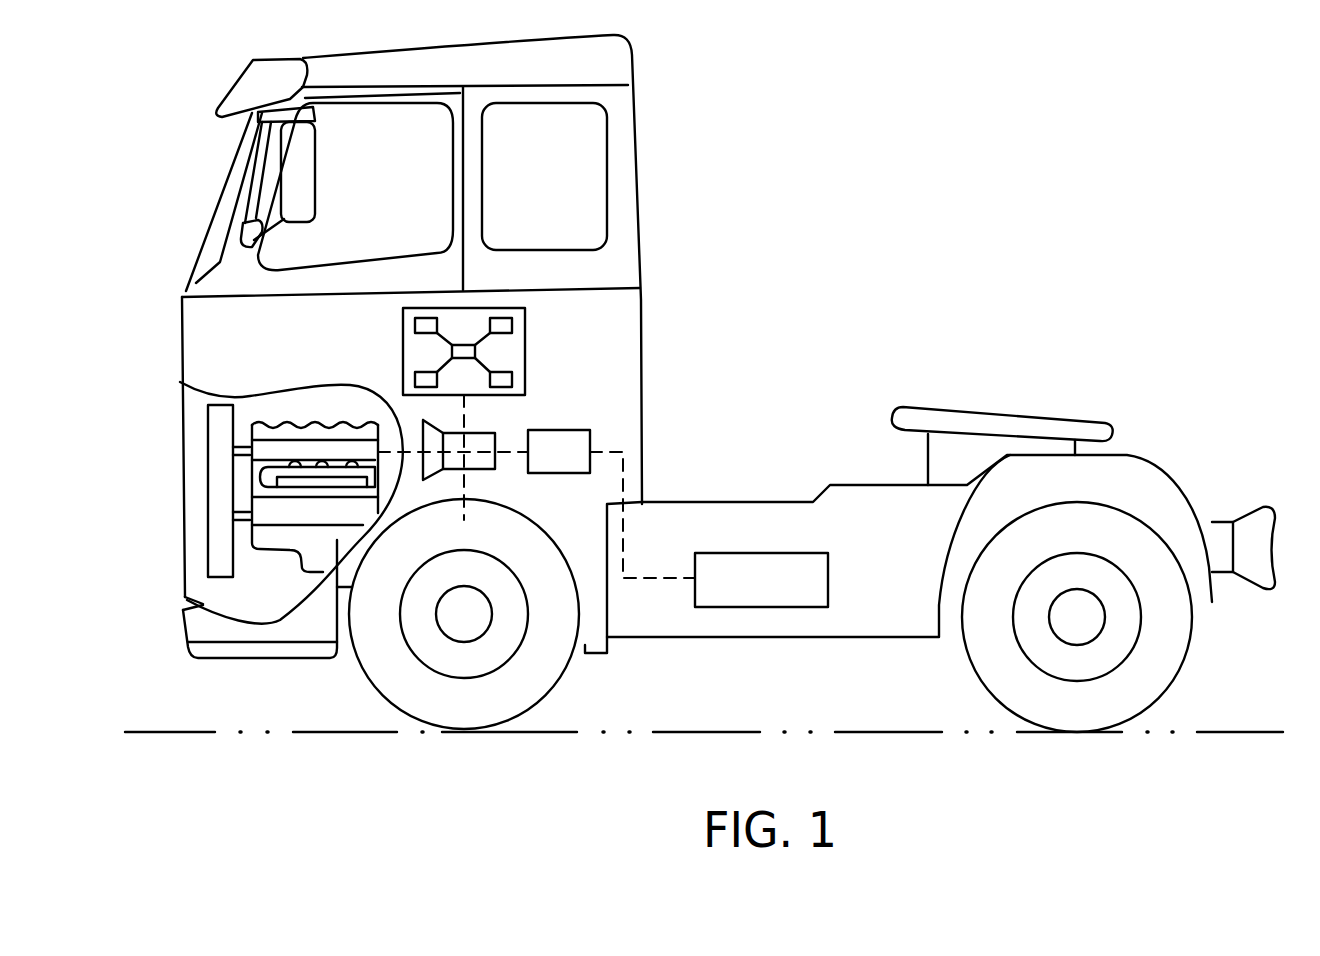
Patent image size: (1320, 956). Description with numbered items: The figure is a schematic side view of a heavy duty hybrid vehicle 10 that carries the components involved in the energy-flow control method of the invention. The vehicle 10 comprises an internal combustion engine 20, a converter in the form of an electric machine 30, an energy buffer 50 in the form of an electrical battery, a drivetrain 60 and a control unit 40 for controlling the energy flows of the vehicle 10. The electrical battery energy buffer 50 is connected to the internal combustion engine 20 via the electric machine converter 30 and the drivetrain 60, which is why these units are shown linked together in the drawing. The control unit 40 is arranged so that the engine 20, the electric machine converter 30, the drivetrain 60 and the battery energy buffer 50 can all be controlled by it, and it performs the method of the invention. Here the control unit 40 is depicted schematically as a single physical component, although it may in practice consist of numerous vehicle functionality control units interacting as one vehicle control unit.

The heavy duty hybrid vehicle 10 is at (840, 122).
The internal combustion engine 20 is at (268, 578).
The electric machine converter 30 is at (596, 435).
The control unit 40 is at (533, 351).
The energy buffer 50 is at (776, 595).
The drivetrain 60 is at (455, 478).